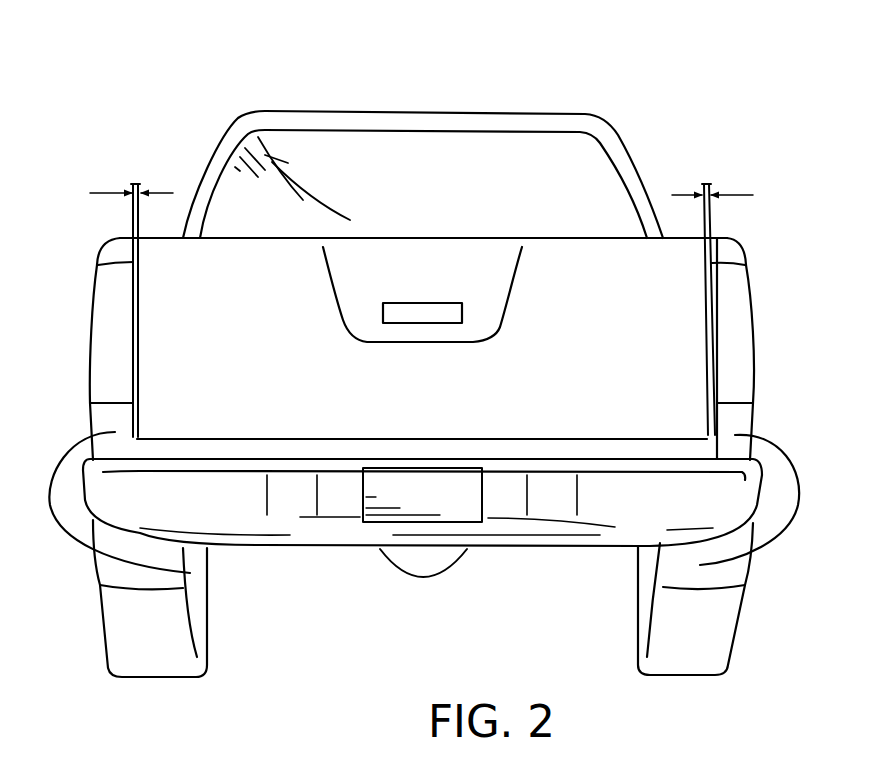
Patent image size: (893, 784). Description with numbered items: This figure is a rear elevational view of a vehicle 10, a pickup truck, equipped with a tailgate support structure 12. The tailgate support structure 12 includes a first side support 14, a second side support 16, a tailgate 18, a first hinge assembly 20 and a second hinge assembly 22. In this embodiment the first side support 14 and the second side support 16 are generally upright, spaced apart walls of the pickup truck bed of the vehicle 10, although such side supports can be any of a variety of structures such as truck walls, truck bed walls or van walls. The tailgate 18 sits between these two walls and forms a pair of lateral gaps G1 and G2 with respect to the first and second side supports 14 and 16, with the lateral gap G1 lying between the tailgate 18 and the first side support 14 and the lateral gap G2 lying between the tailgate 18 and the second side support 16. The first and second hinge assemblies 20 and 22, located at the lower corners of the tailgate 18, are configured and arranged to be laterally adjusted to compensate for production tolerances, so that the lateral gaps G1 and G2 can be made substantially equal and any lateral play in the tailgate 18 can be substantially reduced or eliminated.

The vehicle 10 is at (424, 356).
The tailgate support structure 12 is at (620, 597).
The first side support 14 is at (700, 565).
The second side support 16 is at (190, 573).
The tailgate 18 is at (503, 407).
The first hinge assembly 20 is at (693, 424).
The second hinge assembly 22 is at (165, 420).
The lateral gap G1 is at (707, 183).
The lateral gap G2 is at (140, 183).